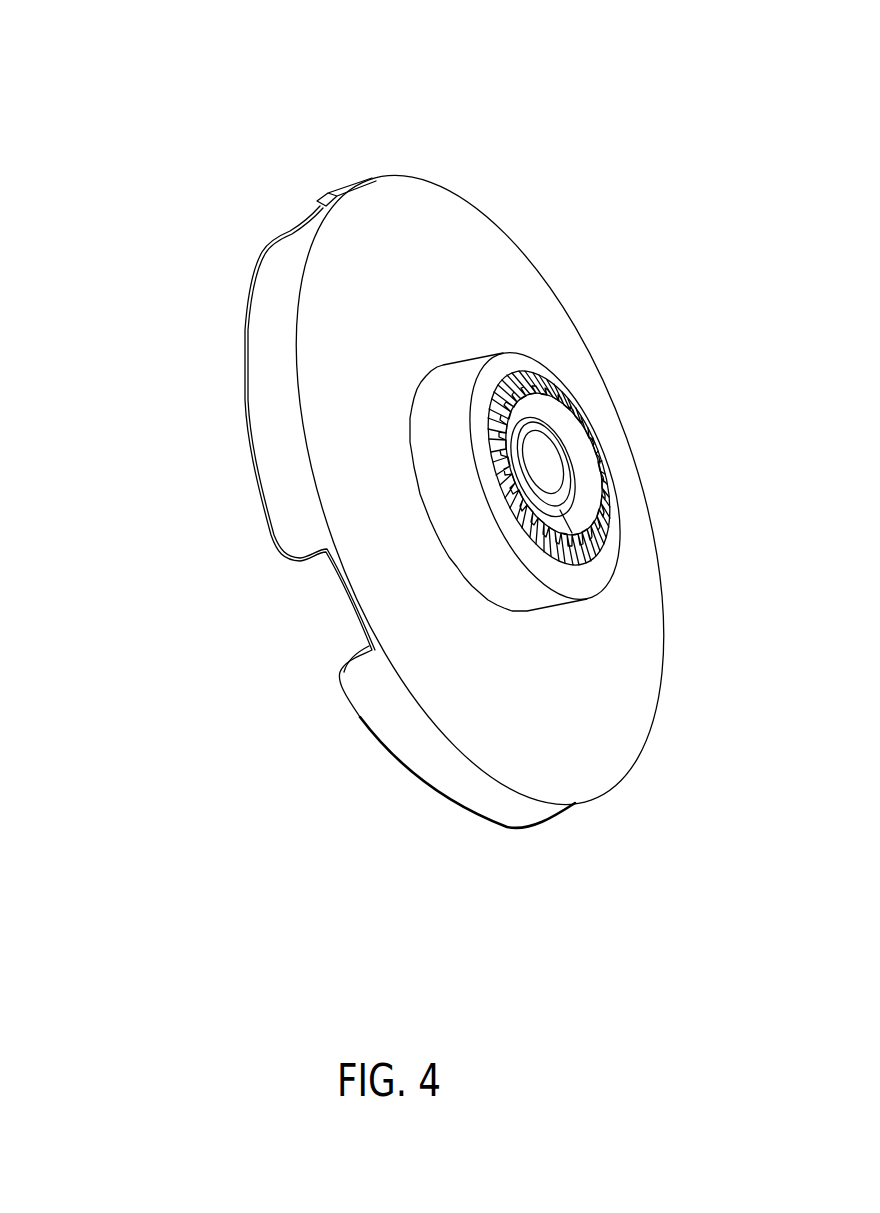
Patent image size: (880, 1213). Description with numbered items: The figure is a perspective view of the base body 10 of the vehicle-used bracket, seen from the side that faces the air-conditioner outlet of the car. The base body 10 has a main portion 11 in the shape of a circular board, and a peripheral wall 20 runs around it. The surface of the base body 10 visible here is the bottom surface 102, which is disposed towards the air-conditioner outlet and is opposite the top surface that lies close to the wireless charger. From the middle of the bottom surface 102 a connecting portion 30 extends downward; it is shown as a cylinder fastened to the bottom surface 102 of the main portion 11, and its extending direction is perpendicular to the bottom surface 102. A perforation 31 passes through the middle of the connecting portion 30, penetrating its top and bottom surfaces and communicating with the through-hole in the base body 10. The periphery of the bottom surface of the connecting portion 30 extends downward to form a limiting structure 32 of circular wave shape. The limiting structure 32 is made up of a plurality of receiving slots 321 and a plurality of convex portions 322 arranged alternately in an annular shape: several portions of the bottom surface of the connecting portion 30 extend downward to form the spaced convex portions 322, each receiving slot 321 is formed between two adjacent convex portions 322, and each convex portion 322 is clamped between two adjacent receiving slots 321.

The base body 10 is at (107, 50).
The main portion 11 is at (478, 242).
The bottom surface 102 is at (610, 650).
The peripheral wall 20 is at (268, 430).
The connecting portion 30 is at (535, 592).
The perforation 31 is at (553, 485).
The limiting structure 32 is at (698, 383).
The receiving slot 321 is at (577, 433).
The convex portion 322 is at (583, 450).